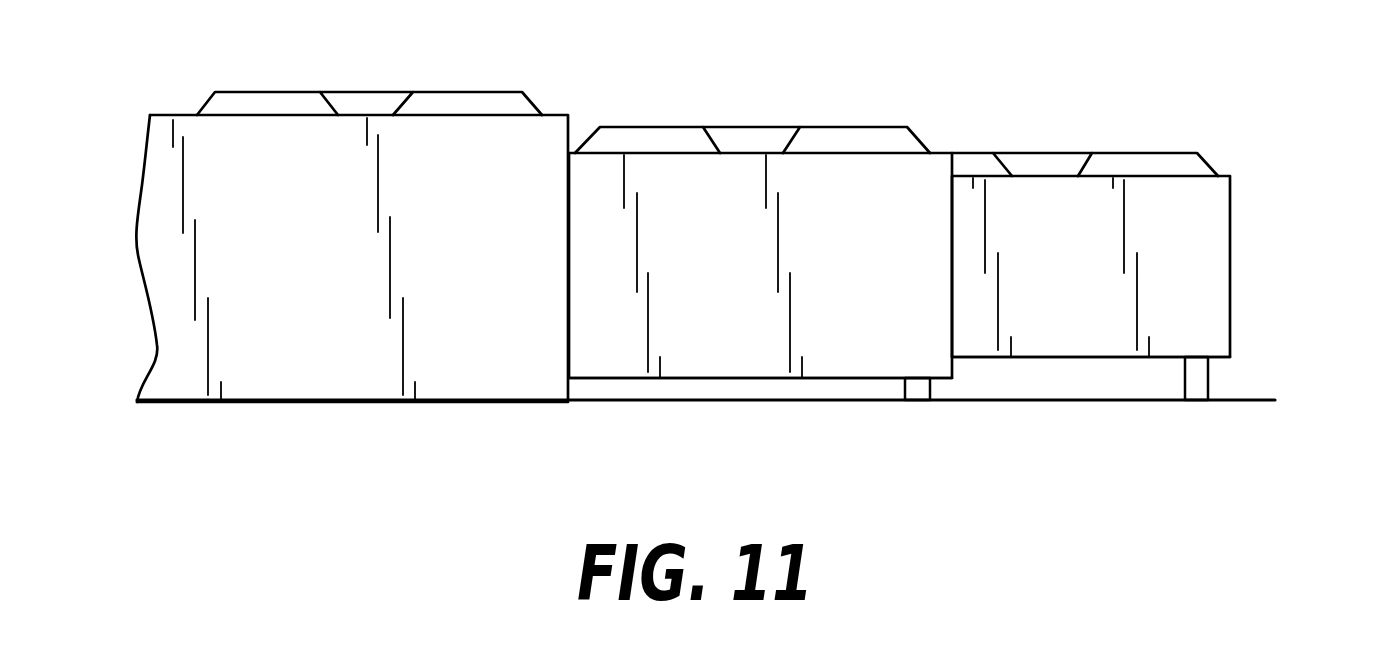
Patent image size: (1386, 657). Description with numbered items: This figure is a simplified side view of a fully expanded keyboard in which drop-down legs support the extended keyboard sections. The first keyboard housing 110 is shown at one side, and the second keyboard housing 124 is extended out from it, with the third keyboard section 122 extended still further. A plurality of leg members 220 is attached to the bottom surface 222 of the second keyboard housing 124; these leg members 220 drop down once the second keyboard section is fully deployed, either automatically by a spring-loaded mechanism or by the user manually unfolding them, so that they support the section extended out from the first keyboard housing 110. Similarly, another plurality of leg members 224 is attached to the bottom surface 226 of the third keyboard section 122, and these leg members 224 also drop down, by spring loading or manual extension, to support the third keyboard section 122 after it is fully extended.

The first keyboard housing 110 is at (323, 383).
The second keyboard housing 124 is at (625, 355).
The third keyboard section 122 is at (1203, 197).
The bottom surface 222 is at (777, 378).
The leg members 220 is at (922, 400).
The bottom surface 226 is at (1075, 358).
The leg members 224 is at (1193, 400).